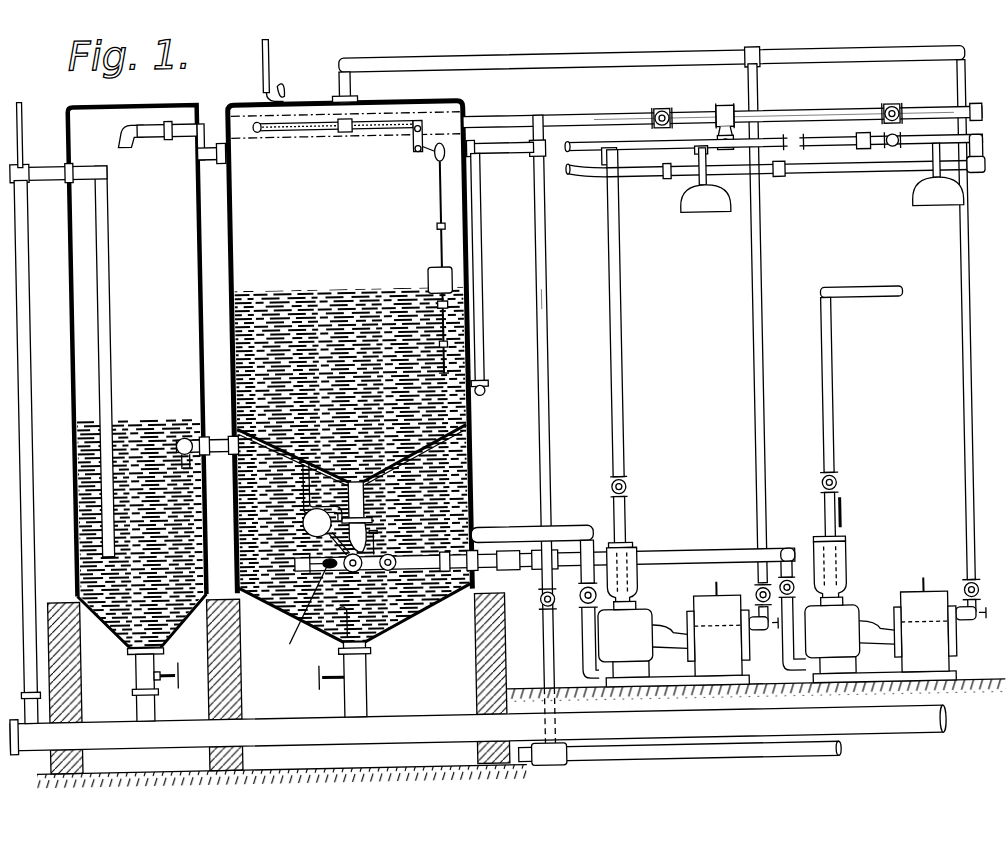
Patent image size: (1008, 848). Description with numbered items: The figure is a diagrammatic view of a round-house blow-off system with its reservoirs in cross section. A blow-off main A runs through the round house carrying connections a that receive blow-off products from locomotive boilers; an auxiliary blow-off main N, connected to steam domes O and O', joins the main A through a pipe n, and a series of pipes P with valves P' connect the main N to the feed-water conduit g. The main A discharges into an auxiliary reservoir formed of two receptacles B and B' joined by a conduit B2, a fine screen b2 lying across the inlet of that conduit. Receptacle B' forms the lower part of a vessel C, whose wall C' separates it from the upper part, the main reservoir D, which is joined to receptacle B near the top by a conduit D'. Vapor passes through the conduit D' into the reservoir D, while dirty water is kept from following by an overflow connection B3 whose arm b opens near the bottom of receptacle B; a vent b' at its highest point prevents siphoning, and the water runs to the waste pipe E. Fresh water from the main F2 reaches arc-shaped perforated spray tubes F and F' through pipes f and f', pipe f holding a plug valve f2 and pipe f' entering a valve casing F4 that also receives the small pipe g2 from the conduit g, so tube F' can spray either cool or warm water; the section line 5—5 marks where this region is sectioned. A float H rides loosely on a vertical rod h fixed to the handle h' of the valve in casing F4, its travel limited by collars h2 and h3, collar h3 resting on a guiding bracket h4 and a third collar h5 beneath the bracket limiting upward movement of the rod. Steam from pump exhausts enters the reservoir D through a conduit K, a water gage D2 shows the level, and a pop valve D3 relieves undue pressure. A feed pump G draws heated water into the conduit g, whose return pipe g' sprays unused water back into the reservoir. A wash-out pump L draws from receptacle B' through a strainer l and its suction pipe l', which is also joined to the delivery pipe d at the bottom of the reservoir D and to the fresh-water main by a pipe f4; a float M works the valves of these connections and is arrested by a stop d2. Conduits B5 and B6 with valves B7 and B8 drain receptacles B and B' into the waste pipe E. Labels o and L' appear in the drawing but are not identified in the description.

The waste pipe E is at (125, 724).
The main reservoir D is at (351, 373).
The vessel or receptacle C is at (369, 441).
The wall C' is at (376, 459).
The member of auxiliary reservoir B' is at (355, 615).
The member of auxiliary reservoir B is at (138, 380).
The arm of over-flow member b is at (118, 361).
The over-flow connection B3 is at (64, 443).
The vent b' is at (37, 127).
The conduit B2 is at (215, 432).
The fine screen b2 is at (180, 433).
The conduit D' is at (172, 160).
The pop valve D3 is at (286, 84).
The conduit K is at (390, 56).
The arc-shaped perforated tube F is at (346, 143).
The arc-shaped perforated tube F' is at (339, 145).
The valve casing F4 is at (420, 152).
The section line 5 is at (420, 128).
The plug valve f2 is at (438, 152).
The handle of valve h' is at (424, 214).
The vertical rod h is at (411, 293).
The collar h2 is at (441, 227).
The float H is at (456, 272).
The collar h3 is at (432, 290).
The guiding bracket h4 is at (451, 306).
The third collar h5 is at (450, 346).
The stop d2 is at (306, 470).
The suction pipe l' is at (550, 592).
The delivery pipe d is at (355, 547).
The float M is at (308, 526).
The valves on discharge pipe o is at (417, 560).
The strainer l is at (302, 617).
The conduit B5 is at (131, 680).
The valve B7 is at (173, 683).
The conduit B6 is at (361, 680).
The valve B8 is at (314, 680).
The pipe f is at (722, 102).
The blow-off pipe or main A is at (812, 116).
The connections a is at (670, 114).
The pipe n is at (728, 115).
The pipe f' is at (512, 417).
The fresh water main F2 is at (550, 302).
The water gage D2 is at (486, 242).
The pipe f4 is at (556, 527).
The small pipe g2 is at (433, 146).
The auxiliary blow-off main N is at (800, 142).
The feed water conduit g is at (736, 377).
The pipe of small diameter g' is at (776, 189).
The pipes P is at (659, 165).
The valve P' is at (868, 145).
The steam dome O is at (706, 197).
The steam dome O' is at (938, 192).
The feed pump G is at (673, 634).
The pipe to pump L L' is at (861, 412).
The wash-out pump L is at (880, 608).